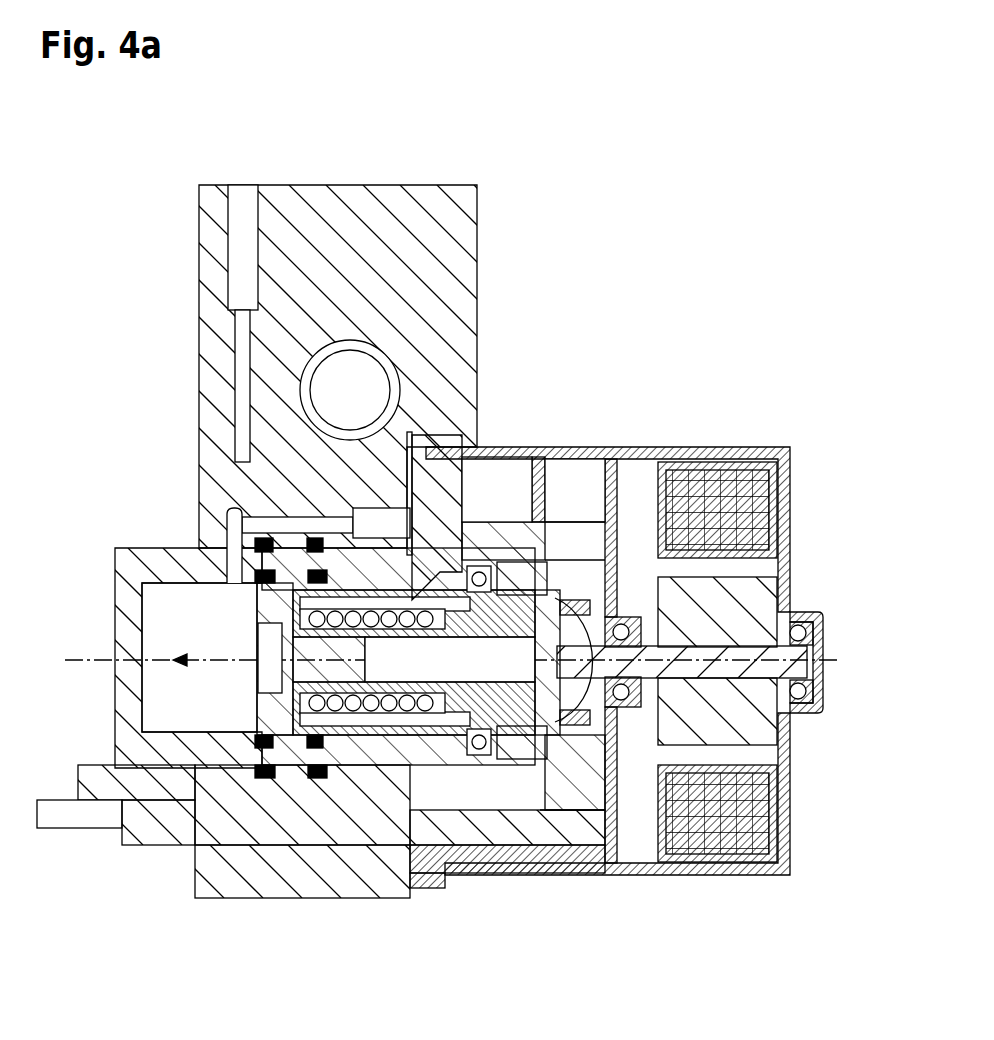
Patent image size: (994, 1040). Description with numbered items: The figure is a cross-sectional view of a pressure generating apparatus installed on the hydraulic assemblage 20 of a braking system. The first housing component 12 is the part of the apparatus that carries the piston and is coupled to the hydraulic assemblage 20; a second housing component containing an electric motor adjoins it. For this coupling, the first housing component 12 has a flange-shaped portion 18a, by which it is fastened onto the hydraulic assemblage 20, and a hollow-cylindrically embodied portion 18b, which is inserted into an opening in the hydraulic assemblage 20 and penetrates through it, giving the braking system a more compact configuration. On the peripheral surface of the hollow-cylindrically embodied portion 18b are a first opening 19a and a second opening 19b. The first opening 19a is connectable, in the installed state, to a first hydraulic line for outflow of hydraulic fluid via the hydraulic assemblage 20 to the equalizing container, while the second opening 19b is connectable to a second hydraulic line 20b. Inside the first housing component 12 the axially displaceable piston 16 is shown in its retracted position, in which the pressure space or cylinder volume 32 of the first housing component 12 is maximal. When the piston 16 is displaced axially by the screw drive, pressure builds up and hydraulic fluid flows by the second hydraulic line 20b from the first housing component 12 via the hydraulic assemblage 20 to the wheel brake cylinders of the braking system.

The first housing component 12 is at (640, 432).
The piston 16 is at (262, 603).
The flange-shaped portion 18a is at (420, 875).
The hollow-cylindrically embodied portion 18b is at (120, 593).
The first opening 19a is at (477, 447).
The second opening 19b is at (233, 572).
The hydraulic assemblage 20 is at (370, 215).
The second hydraulic line 20b is at (270, 500).
The pressure space or cylinder volume 32 is at (187, 693).